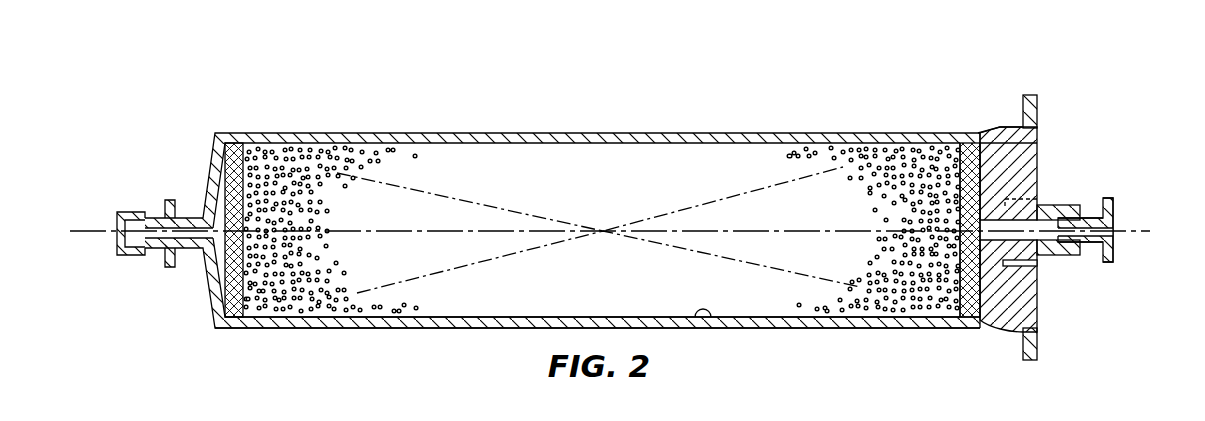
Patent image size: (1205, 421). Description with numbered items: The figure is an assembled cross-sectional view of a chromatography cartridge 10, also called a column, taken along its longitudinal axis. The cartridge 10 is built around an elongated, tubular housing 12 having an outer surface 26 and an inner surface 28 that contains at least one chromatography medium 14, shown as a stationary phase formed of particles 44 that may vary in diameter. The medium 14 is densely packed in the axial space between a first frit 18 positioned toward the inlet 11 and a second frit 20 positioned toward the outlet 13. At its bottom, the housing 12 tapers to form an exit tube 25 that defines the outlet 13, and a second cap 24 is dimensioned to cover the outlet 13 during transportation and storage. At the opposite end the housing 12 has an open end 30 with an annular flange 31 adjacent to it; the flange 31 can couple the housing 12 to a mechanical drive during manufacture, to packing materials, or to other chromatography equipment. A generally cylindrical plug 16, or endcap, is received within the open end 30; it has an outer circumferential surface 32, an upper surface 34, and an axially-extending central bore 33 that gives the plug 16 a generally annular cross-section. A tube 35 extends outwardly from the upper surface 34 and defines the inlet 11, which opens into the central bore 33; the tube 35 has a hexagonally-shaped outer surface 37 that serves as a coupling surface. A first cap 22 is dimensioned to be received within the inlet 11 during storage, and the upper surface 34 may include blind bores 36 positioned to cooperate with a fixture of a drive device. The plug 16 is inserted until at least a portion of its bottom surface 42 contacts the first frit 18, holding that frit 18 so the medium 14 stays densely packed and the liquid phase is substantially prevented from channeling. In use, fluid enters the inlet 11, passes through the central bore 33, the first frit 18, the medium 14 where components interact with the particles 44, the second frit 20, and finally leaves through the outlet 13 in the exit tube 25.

The chromatography cartridge 10 is at (622, 212).
The inlet 11 is at (1088, 212).
The housing 12 is at (546, 133).
The outlet 13 is at (148, 239).
The chromatography medium 14 is at (352, 295).
The plug 16 is at (1074, 210).
The first frit 18 is at (968, 141).
The second frit 20 is at (232, 147).
The first cap 22 is at (1113, 252).
The second cap 24 is at (144, 215).
The exit tube 25 is at (186, 249).
The outer surface 26 is at (852, 329).
The inner surface 28 is at (712, 323).
The open end 30 is at (1037, 140).
The annular flange 31 is at (1037, 110).
The outer circumferential surface 32 is at (1002, 129).
The central bore 33 is at (1062, 255).
The upper surface 34 is at (1038, 310).
The tube 35 is at (1078, 257).
The blind bore 36 is at (1037, 174).
The outer surface 37 is at (1052, 206).
The bottom surface 42 is at (968, 313).
The particles 44 is at (279, 301).